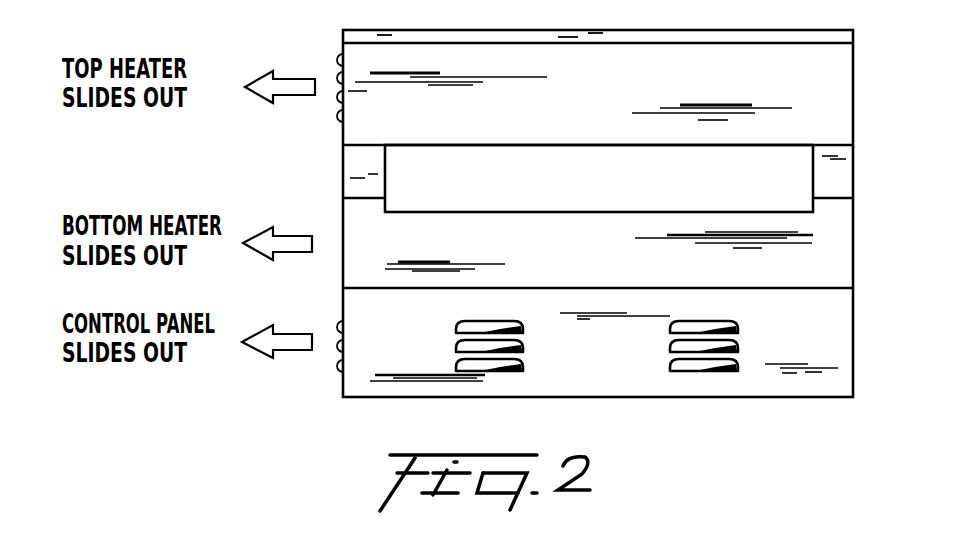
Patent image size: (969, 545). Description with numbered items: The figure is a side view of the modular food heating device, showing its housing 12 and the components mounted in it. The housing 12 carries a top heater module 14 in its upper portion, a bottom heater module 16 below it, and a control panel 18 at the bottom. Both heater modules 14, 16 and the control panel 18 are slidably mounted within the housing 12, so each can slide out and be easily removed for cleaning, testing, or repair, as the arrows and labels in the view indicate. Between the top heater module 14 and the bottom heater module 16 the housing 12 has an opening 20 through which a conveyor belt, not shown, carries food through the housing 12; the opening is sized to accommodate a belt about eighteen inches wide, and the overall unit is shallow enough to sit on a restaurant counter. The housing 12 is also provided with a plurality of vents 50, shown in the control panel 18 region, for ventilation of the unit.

The housing 12 is at (853, 88).
The top heater module 14 is at (565, 102).
The bottom heater module 16 is at (565, 262).
The control panel 18 is at (560, 367).
The opening 20 is at (629, 178).
The vents 50 is at (640, 341).